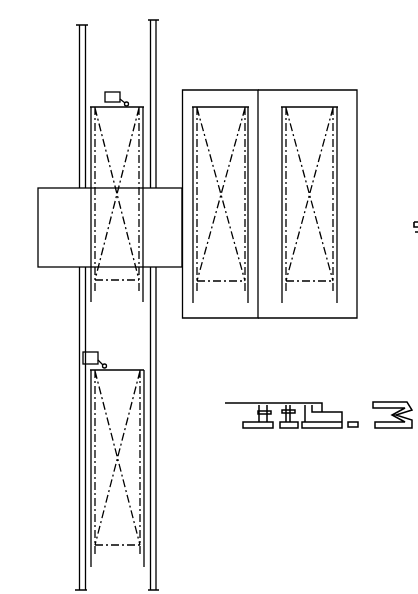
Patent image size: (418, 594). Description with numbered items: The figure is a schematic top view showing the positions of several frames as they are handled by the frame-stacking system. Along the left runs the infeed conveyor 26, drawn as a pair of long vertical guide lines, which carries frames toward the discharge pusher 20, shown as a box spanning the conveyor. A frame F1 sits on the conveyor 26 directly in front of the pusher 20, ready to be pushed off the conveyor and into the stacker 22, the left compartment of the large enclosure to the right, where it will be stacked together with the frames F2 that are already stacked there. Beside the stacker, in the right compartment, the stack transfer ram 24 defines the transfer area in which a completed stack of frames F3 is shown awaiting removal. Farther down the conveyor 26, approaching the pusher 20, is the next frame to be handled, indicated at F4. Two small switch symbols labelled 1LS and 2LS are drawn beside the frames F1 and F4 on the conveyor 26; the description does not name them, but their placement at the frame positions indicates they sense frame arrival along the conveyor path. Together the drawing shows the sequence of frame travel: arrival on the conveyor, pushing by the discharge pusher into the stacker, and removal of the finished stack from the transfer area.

The discharge pusher 20 is at (71, 186).
The stacker 22 is at (233, 321).
The stack transfer ram 24 is at (325, 321).
The infeed conveyor 26 is at (72, 367).
The frame F1 is at (100, 140).
The frames F2 is at (225, 112).
The stack of frames F3 is at (310, 113).
The frame F4 is at (146, 515).
The limit switch 1LS is at (113, 92).
The limit switch 2LS is at (93, 352).